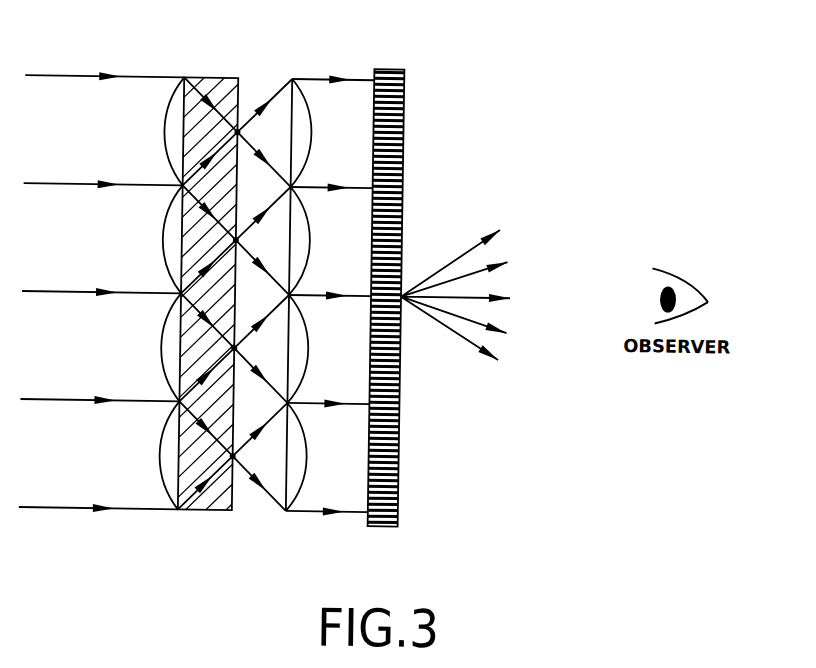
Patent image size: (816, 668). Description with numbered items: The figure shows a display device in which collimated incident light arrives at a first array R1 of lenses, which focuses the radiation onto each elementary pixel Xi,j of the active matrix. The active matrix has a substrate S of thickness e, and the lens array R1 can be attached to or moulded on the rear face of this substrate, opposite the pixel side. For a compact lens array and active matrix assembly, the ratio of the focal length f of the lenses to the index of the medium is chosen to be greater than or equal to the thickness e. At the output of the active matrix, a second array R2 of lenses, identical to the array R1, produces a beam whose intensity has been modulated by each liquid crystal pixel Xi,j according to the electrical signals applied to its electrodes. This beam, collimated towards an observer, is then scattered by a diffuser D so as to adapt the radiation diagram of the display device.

The array of lenses R1 is at (175, 122).
The second array of lenses R2 is at (295, 124).
The substrate S is at (216, 496).
The elementary pixel Xi,j is at (235, 133).
The diffuser D is at (401, 498).
The focal length f is at (234, 57).
The thickness e is at (234, 554).